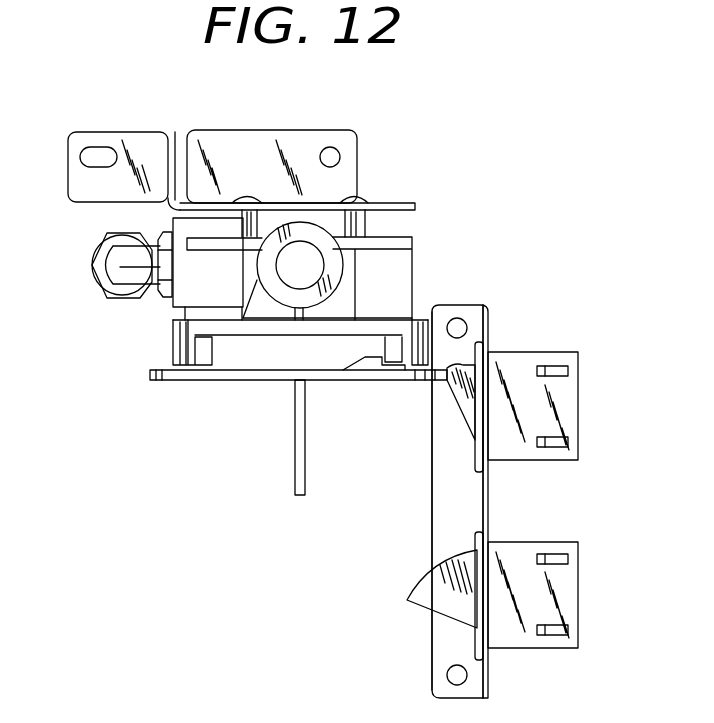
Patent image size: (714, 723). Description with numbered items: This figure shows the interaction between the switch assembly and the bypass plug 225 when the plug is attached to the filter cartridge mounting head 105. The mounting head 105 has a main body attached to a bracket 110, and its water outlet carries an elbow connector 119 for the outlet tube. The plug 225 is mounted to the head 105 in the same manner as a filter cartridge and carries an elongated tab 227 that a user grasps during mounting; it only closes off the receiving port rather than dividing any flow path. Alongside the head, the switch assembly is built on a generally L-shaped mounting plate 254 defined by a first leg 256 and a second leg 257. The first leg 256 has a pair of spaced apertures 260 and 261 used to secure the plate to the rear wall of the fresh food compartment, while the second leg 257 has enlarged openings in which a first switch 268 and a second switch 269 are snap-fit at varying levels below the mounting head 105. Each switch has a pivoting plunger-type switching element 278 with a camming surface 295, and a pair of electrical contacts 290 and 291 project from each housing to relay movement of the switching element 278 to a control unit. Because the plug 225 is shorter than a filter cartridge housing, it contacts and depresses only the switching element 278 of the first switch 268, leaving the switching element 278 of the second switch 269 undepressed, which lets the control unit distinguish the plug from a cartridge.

The filter cartridge mounting head 105 is at (432, 200).
The bracket 110 is at (251, 112).
The elbow connector 119 is at (106, 275).
The bypass plug 225 is at (223, 382).
The elongated tab 227 is at (293, 445).
The mounting plate 254 is at (500, 693).
The first leg 256 is at (440, 495).
The second leg 257 is at (488, 498).
The aperture 260 is at (460, 330).
The aperture 261 is at (456, 678).
The first switch 268 is at (578, 382).
The second switch 269 is at (578, 587).
The switching element 278 is at (453, 383).
The electrical contact 290 is at (557, 368).
The electrical contact 291 is at (562, 448).
The camming surface 295 is at (420, 605).